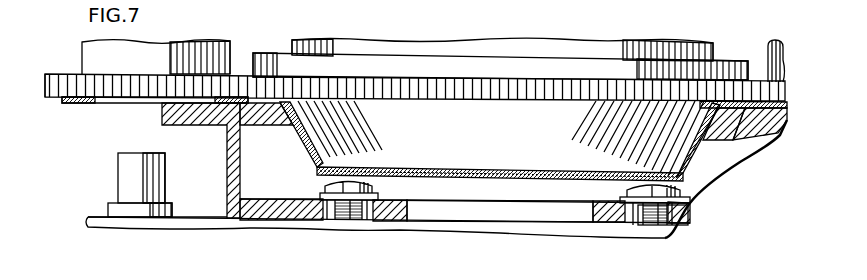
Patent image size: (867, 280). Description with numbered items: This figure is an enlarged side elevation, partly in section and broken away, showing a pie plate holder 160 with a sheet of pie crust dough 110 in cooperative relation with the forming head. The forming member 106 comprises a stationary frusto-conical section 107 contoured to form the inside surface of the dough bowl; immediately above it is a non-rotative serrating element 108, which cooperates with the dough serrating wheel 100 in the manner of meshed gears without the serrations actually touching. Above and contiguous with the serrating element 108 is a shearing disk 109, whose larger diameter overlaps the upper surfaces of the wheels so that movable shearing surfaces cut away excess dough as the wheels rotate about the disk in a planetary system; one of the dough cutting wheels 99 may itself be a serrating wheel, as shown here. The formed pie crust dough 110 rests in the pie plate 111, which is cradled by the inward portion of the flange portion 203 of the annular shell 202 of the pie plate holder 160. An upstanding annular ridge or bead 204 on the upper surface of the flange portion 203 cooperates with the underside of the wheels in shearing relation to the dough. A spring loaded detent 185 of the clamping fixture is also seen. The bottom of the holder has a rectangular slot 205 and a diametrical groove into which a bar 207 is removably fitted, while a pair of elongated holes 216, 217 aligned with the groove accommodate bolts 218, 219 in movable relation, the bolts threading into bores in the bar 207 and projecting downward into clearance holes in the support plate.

The dough serrating wheel 100 is at (53, 86).
The non-rotative serrating element 108 is at (386, 97).
The shearing disk 109 is at (548, 76).
The forming member 106 is at (644, 44).
The dough cutting wheel 99 is at (755, 98).
The pie crust dough 110 is at (592, 169).
The pie plate 111 is at (463, 176).
The frusto-conical section 107 is at (699, 151).
The flange portion 203 is at (209, 117).
The annular ridge or bead 204 is at (252, 104).
The annular shell 202 is at (265, 205).
The bar 207 is at (190, 222).
The spring loaded detent 185 is at (119, 179).
The pie plate holder 160 is at (316, 233).
The bolt 219 is at (348, 219).
The elongated hole 217 is at (363, 221).
The rectangular slot 205 is at (555, 215).
The elongated hole 216 is at (638, 223).
The bolt 218 is at (673, 218).